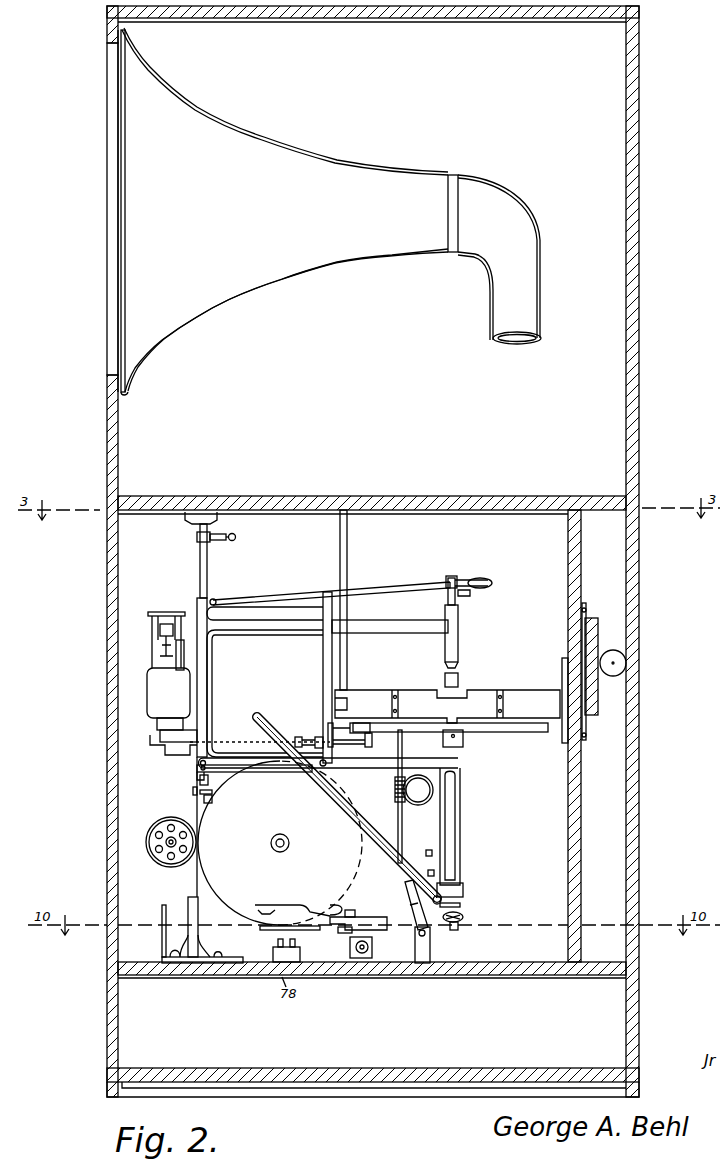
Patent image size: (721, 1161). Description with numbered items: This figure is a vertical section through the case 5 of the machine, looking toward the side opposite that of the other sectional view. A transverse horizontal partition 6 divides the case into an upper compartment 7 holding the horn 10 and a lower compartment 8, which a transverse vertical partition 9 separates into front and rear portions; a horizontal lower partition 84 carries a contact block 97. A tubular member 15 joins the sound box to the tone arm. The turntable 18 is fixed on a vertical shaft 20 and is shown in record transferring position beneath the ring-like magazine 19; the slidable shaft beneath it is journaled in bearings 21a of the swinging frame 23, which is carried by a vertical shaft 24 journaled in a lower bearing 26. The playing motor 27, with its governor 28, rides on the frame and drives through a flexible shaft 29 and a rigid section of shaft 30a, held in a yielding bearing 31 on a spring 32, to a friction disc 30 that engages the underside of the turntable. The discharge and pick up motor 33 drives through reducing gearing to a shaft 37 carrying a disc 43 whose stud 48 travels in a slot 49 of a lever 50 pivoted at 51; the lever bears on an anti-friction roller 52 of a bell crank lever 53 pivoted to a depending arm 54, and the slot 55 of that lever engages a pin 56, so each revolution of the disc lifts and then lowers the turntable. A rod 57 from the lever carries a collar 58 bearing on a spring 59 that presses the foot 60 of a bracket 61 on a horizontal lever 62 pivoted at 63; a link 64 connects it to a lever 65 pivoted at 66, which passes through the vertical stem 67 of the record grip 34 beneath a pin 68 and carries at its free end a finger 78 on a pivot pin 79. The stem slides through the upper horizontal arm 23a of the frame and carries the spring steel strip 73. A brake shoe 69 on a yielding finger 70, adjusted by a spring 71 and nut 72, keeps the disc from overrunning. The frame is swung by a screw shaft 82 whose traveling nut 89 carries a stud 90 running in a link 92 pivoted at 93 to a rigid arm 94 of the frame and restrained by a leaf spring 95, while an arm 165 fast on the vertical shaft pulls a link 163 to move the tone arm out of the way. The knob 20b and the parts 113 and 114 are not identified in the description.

The case 5 is at (626, 326).
The transverse horizontal partition 6 is at (533, 506).
The upper compartment 7 is at (372, 259).
The lower compartment 8 is at (343, 738).
The transverse vertical partition 9 is at (570, 851).
The horn 10 is at (329, 211).
The tubular member 15 is at (196, 526).
The turntable 18 is at (532, 733).
The magazine 19 is at (447, 706).
The vertical shaft 20 is at (464, 742).
The operating knob 20b is at (613, 650).
The bearings 21a is at (462, 763).
The swinging frame 23 is at (431, 813).
The upper horizontal arm 23a is at (384, 634).
The vertical shaft 24 is at (208, 569).
The lower bearing 26 is at (188, 939).
The playing motor 27 is at (182, 699).
The governor 28 is at (151, 645).
The flexible shaft 29 is at (240, 725).
The friction disc 30 is at (372, 746).
The rigid section of shaft 30a is at (310, 734).
The yielding bearing 31 is at (349, 734).
The spring 32 is at (305, 749).
The discharge and pick up motor 33 is at (160, 822).
The record grip 34 is at (465, 623).
The shaft 37 is at (271, 843).
The disc 43 is at (280, 843).
The stud 48 is at (347, 807).
The slot 49 is at (296, 780).
The lever 50 is at (386, 854).
The pivot 51 is at (466, 884).
The anti-friction roller 52 is at (410, 892).
The bell crank lever 53 is at (414, 915).
The depending arm 54 is at (461, 905).
The slot 55 is at (464, 917).
The pin 56 is at (455, 930).
The rod 57 is at (409, 796).
The collar 58 is at (418, 790).
The spring 59 is at (395, 793).
The foot 60 is at (418, 792).
The bracket 61 is at (406, 762).
The horizontal lever 62 is at (265, 775).
The pivot 63 is at (197, 771).
The link 64 is at (323, 672).
The lever 65 is at (366, 590).
The pivot 66 is at (218, 602).
The vertical stem 67 is at (445, 582).
The pin 68 is at (459, 579).
The brake shoe 69 is at (212, 799).
The yielding finger 70 is at (192, 800).
The spring 71 is at (192, 781).
The nut 72 is at (193, 791).
The spring steel strip 73 is at (460, 676).
The finger 78 is at (488, 580).
The pivot pin 79 is at (471, 594).
The screw shaft 82 is at (372, 948).
The horizontal lower partition 84 is at (533, 975).
The traveling nut 89 is at (350, 949).
The stud 90 is at (358, 913).
The link 92 is at (290, 941).
The pivot 93 is at (286, 947).
The rigid arm 94 is at (292, 910).
The leaf spring 95 is at (331, 900).
The contact block 97 is at (167, 979).
The foot 113 is at (431, 938).
The pins 114 is at (428, 855).
The link 163 is at (236, 539).
The arm 165 is at (228, 533).